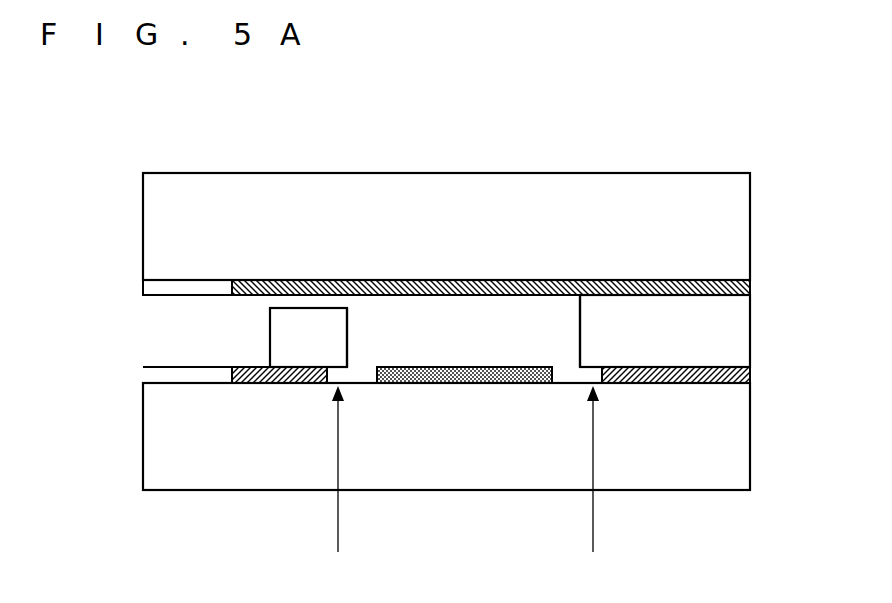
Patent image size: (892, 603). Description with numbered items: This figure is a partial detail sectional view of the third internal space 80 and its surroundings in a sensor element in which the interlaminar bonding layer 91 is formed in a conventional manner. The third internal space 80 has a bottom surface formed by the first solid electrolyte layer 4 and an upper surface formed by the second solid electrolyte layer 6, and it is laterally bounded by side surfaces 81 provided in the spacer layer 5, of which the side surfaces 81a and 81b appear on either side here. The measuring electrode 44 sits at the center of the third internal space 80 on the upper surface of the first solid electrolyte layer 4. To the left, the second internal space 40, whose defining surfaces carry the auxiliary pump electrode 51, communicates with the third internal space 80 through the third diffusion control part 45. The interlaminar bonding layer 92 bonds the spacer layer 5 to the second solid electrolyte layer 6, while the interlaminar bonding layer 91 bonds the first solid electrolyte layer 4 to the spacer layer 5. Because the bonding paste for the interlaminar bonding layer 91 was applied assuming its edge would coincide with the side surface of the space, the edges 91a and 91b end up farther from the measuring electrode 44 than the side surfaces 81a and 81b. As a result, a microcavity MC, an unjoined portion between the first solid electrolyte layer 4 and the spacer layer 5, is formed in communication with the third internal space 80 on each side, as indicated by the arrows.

The first solid electrolyte layer 4 is at (737, 445).
The spacer layer 5 is at (737, 342).
The second solid electrolyte layer 6 is at (737, 233).
The second internal space 40 is at (203, 320).
The measuring electrode 44 is at (465, 358).
The third diffusion control part 45 is at (300, 325).
The auxiliary pump electrode 51 is at (176, 298).
The third internal space 80 is at (420, 338).
The side surfaces 81 is at (491, 233).
The side surface 81a is at (358, 333).
The side surface 81b is at (567, 333).
The interlaminar bonding layer 91 is at (528, 259).
The edge of the interlaminar bonding layer 91a is at (340, 383).
The edge of the interlaminar bonding layer 91b is at (596, 378).
The interlaminar bonding layer 92 is at (748, 288).
The microcavity MC is at (466, 486).